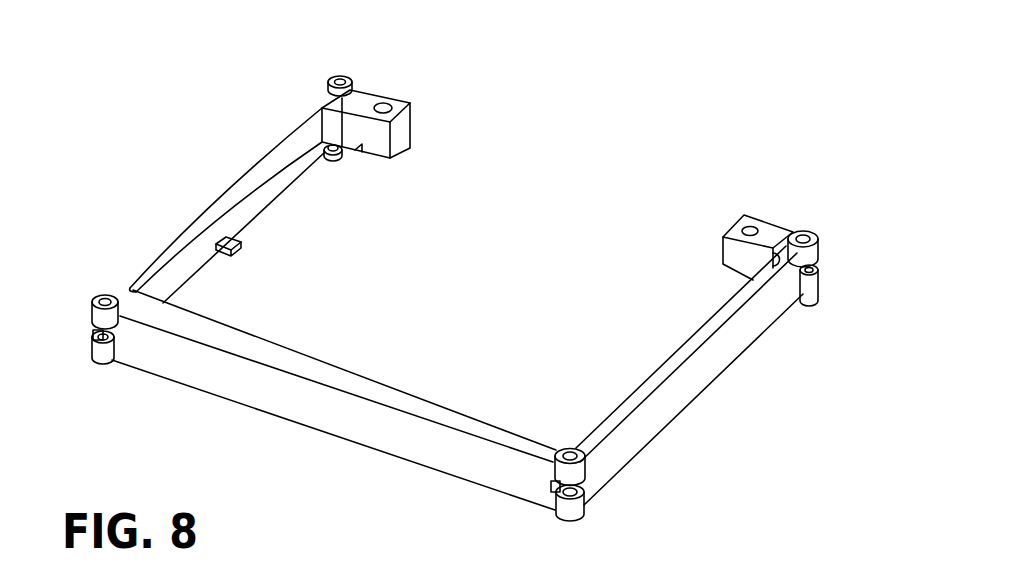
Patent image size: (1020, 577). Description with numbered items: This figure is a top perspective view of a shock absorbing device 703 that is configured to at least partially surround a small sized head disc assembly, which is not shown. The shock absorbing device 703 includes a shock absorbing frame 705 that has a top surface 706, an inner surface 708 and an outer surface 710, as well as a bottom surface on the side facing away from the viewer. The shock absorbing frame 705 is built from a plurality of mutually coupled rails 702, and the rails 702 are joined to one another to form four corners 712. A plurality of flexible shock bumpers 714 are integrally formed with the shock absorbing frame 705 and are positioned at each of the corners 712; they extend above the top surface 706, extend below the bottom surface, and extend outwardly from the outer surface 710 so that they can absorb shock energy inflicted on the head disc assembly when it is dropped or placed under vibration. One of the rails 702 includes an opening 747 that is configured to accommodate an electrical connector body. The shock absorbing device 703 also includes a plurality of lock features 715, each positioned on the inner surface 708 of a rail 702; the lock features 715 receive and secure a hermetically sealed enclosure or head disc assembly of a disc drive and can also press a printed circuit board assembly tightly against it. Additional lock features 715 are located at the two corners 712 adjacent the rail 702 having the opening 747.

The rails 702 is at (394, 101).
The shock absorbing device 703 is at (712, 141).
The shock absorbing frame 705 is at (350, 446).
The top surface 706 is at (378, 92).
The inner surface 708 is at (394, 150).
The outer surface 710 is at (190, 376).
The corners 712 is at (320, 97).
The flexible shock bumpers 714 is at (346, 79).
The lock features 715 is at (338, 158).
The opening 747 is at (586, 174).